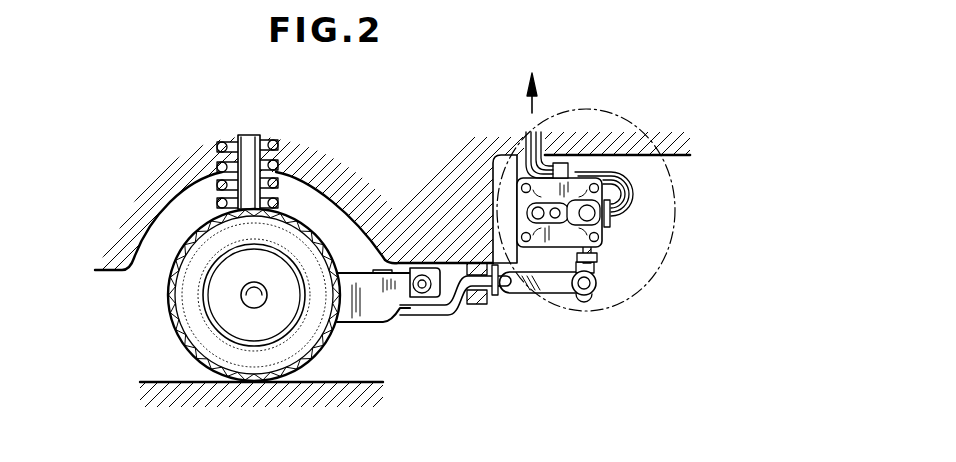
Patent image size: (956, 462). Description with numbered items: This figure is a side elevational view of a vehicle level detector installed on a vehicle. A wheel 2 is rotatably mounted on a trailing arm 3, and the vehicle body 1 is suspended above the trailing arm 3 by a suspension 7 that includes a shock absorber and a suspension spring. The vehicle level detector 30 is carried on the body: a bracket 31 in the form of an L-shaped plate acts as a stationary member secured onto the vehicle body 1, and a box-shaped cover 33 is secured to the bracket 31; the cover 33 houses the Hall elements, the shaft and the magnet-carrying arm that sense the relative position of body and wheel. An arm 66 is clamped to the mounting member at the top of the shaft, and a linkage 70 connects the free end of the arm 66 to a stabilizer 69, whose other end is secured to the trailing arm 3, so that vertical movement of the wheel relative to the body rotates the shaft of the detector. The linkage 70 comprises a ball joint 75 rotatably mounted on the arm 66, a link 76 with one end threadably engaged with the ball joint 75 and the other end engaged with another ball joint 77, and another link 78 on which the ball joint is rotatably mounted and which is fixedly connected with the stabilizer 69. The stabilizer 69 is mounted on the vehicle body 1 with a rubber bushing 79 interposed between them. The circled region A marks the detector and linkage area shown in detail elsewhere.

The vehicle body 1 is at (677, 138).
The wheel 2 is at (197, 330).
The trailing arm 3 is at (380, 312).
The suspension 7 is at (220, 144).
The vehicle level detector 30 is at (630, 262).
The bracket 31 is at (596, 168).
The cover 33 is at (522, 217).
The arm 66 is at (569, 213).
The stabilizer 69 is at (445, 316).
The linkage 70 is at (593, 307).
The ball joint 75 is at (611, 197).
The link 76 is at (590, 252).
The ball joint 77 is at (597, 284).
The link 78 is at (557, 292).
The rubber bushing 79 is at (486, 303).
The detail region A is at (675, 207).